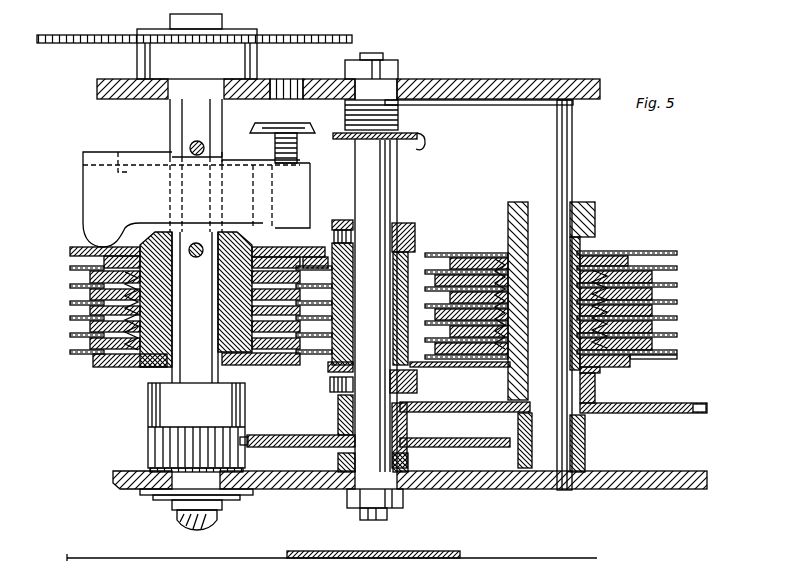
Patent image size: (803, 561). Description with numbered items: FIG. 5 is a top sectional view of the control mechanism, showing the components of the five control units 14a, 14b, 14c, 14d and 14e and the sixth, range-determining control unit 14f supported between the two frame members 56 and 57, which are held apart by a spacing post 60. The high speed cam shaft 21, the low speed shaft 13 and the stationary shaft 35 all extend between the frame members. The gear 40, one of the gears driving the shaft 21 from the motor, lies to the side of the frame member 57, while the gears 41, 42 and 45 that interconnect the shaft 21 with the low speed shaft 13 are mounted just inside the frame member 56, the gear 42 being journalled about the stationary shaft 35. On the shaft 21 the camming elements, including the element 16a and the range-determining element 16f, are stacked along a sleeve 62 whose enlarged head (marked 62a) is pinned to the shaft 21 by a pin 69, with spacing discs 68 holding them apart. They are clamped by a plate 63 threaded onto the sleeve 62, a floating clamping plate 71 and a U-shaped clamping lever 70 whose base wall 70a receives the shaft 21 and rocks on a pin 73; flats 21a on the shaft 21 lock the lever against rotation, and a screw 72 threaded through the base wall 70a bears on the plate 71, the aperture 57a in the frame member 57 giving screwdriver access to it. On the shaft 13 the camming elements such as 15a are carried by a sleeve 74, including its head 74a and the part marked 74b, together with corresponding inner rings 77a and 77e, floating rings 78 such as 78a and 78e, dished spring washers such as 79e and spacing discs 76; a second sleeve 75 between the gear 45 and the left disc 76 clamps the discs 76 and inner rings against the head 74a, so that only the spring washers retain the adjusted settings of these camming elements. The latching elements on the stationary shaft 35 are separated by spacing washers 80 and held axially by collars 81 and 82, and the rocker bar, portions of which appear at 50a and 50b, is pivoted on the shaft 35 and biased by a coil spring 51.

The gear 40 is at (352, 38).
The flats 21a is at (206, 116).
The frame member 57 is at (490, 79).
The aperture 57a is at (292, 84).
The coil spring 51 is at (400, 121).
The washer hook 50b is at (416, 148).
The bolt bracket 50a is at (412, 362).
The clamping lever 70 is at (88, 172).
The base wall 70a is at (116, 153).
The pin 73 is at (191, 145).
The screw 72 is at (311, 158).
The pin 69 is at (194, 244).
The floating clamping plate 71 is at (74, 248).
The camming element 16f is at (70, 257).
The spacing discs 68 is at (70, 336).
The camming element 16a is at (85, 365).
The sleeve 62 is at (242, 369).
The high speed cam shaft 21 is at (170, 372).
The hub plate 62a is at (246, 232).
The plate 63 is at (278, 366).
The collar 81 is at (337, 398).
The collar 82 is at (405, 222).
The spacing discs 76 is at (430, 254).
The floating ring 78e is at (488, 268).
The spacing washers 80 is at (416, 298).
The inner ring 77a is at (460, 366).
The head 74a is at (507, 237).
The sleeve 74 is at (515, 386).
The inner ring 77e is at (598, 265).
The dished spring washer 79e is at (625, 257).
The sixth control unit 14f is at (689, 266).
The control unit 14e is at (688, 281).
The control unit 14d is at (688, 299).
The control unit 14c is at (688, 314).
The control unit 14b is at (688, 331).
The control unit 14a is at (688, 349).
The floating rings 78 is at (676, 354).
The floating ring 78a is at (606, 358).
The second sleeve 75 is at (586, 382).
The low speed shaft 13 is at (597, 393).
The camming element 15a is at (658, 360).
The gear 45 is at (706, 408).
The bracket leg 74b is at (586, 450).
The gear 41 is at (250, 440).
The gear 42 is at (298, 442).
The stationary shaft 35 is at (357, 428).
The frame member 56 is at (633, 491).
The spacing post 60 is at (126, 544).